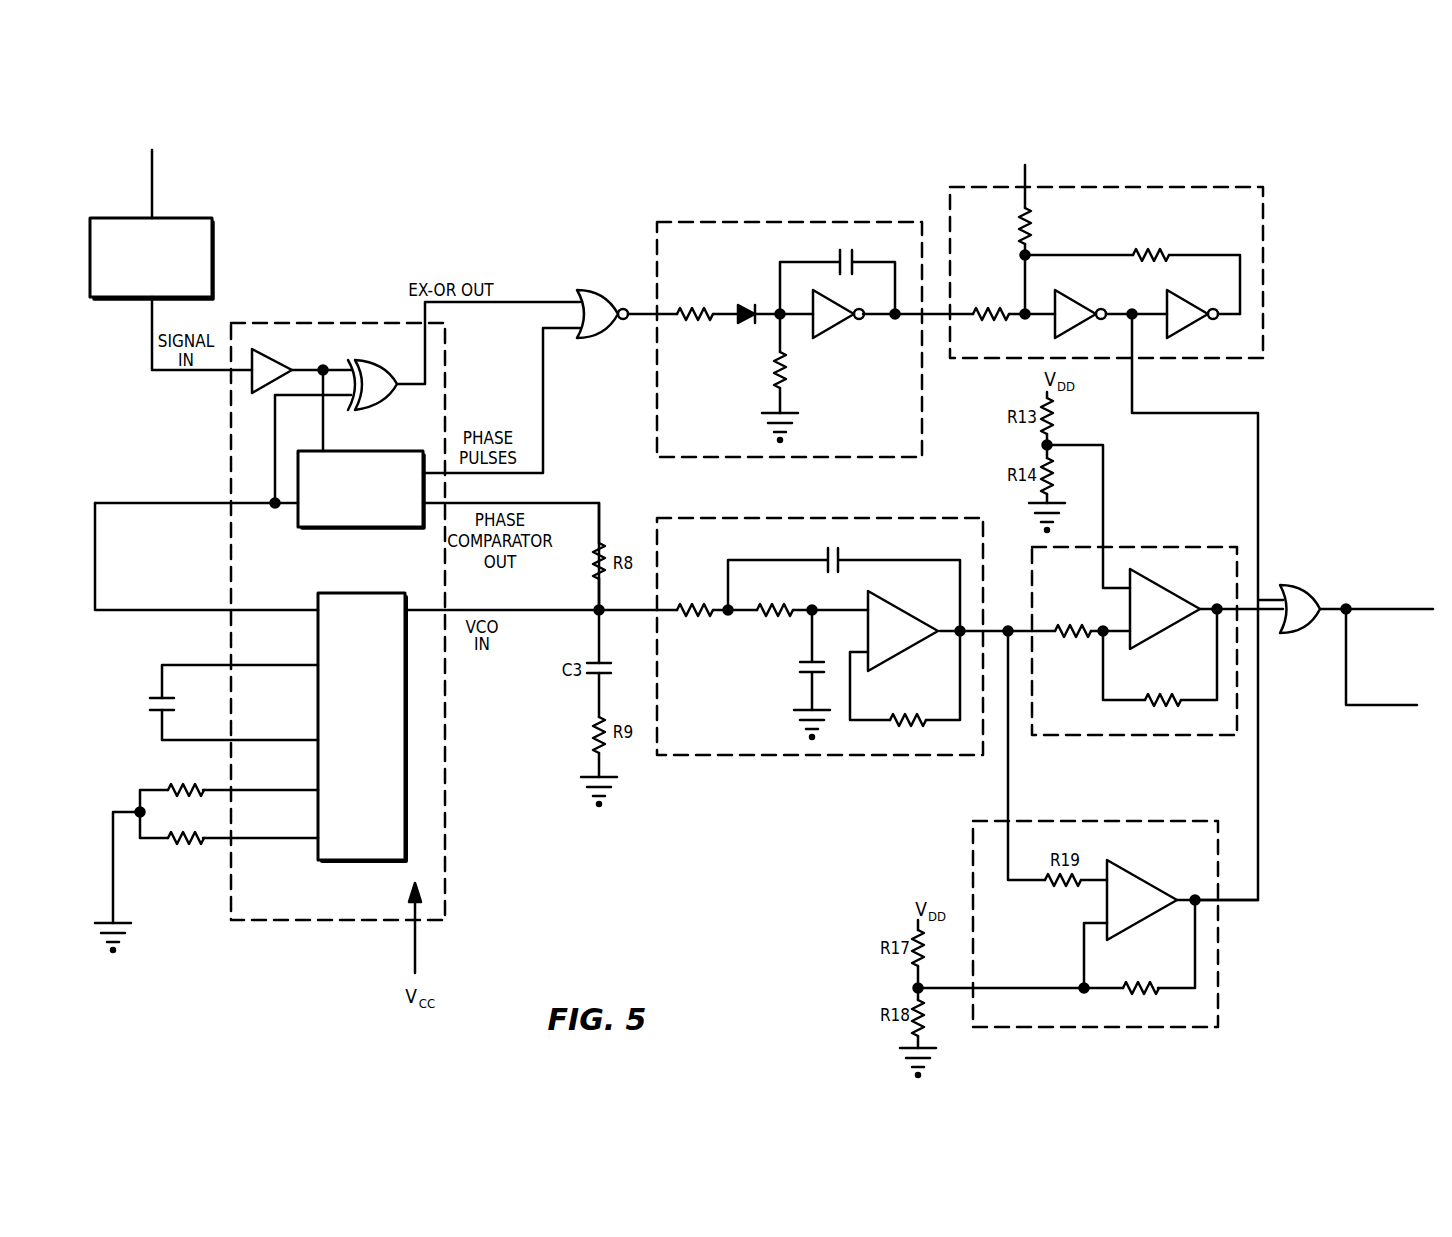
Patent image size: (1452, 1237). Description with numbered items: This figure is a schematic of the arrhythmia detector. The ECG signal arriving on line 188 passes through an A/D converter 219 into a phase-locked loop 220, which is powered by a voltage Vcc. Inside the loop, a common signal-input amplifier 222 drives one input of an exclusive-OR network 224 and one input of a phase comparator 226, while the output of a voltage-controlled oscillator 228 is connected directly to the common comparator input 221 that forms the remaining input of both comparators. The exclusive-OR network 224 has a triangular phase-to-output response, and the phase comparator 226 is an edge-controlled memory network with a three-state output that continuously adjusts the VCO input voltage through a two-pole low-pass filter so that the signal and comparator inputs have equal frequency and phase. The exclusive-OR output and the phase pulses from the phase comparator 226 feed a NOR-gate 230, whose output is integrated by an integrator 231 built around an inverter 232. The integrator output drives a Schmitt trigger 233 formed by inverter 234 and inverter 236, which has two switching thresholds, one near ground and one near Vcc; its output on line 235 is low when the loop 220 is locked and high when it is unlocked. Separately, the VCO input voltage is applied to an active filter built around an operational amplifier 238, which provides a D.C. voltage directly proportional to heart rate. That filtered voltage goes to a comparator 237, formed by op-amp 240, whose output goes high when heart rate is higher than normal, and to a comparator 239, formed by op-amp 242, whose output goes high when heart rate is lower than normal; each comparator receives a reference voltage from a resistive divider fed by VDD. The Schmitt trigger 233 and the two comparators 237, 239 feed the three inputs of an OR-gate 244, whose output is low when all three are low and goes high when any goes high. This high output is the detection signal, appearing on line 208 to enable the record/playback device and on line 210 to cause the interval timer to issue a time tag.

The line 188 is at (152, 188).
The A/D converter 219 is at (212, 255).
The phase-locked loop 220 is at (355, 322).
The comparator input 221 is at (250, 506).
The amplifier 222 is at (283, 362).
The exclusive-OR network 224 is at (388, 362).
The phase comparator 226 is at (360, 528).
The voltage-controlled oscillator 228 is at (352, 862).
The NOR-gate 230 is at (612, 287).
The integrator 231 is at (788, 217).
The inverter 232 is at (838, 326).
The Schmitt trigger 233 is at (1230, 186).
The inverter 234 is at (1070, 298).
The line 235 is at (1133, 380).
The inverter 236 is at (1187, 326).
The comparator 237 is at (1137, 546).
The operational amplifier 238 is at (903, 631).
The comparator 239 is at (1220, 965).
The op-amp 240 is at (1165, 609).
The op-amp 242 is at (1142, 900).
The OR-gate 244 is at (1300, 593).
The line 208 is at (1385, 613).
The line 210 is at (1375, 708).